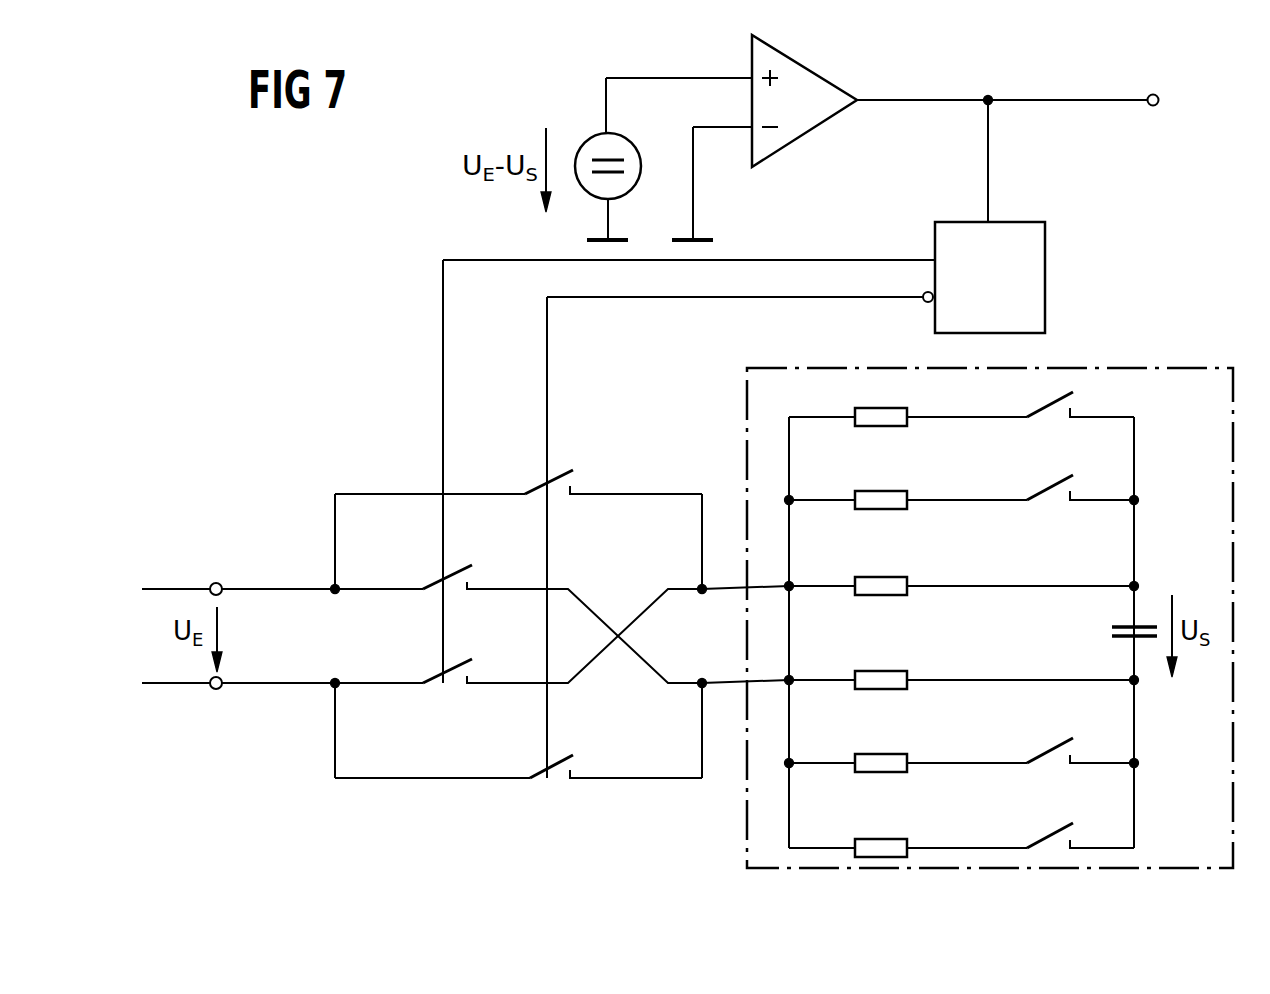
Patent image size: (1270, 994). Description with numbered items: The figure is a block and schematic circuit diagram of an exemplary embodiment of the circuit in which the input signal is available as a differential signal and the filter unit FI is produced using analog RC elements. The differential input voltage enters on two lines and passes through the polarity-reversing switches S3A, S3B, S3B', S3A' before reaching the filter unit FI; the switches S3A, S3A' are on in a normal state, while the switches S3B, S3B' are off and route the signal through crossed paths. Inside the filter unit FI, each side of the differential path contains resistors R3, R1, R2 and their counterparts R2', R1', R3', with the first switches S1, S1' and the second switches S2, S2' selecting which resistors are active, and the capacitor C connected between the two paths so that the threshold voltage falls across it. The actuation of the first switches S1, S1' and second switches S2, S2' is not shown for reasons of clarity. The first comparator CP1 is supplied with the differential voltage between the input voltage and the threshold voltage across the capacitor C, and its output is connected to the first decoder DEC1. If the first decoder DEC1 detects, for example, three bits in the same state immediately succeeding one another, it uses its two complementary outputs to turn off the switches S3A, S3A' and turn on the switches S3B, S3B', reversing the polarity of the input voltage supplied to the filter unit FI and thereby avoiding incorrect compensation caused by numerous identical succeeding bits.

The first comparator CP1 is at (807, 138).
The first decoder DEC1 is at (990, 277).
The switch S3A is at (518, 514).
The switch S3B is at (518, 608).
The switch S3B' is at (518, 636).
The switch S3A' is at (518, 730).
The filter unit FI is at (1155, 366).
The resistor R1 is at (908, 474).
The resistor R2 is at (961, 557).
The resistor R3 is at (908, 447).
The resistor R1' is at (908, 737).
The resistor R2' is at (961, 652).
The resistor R3' is at (908, 822).
The first switch S1 is at (1080, 519).
The second switch S2 is at (1080, 434).
The first switch S1' is at (1066, 733).
The second switch S2' is at (1066, 819).
The capacitor C is at (1110, 630).